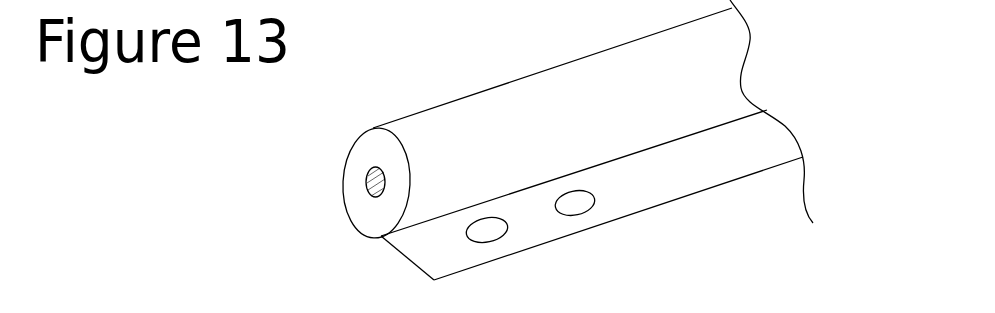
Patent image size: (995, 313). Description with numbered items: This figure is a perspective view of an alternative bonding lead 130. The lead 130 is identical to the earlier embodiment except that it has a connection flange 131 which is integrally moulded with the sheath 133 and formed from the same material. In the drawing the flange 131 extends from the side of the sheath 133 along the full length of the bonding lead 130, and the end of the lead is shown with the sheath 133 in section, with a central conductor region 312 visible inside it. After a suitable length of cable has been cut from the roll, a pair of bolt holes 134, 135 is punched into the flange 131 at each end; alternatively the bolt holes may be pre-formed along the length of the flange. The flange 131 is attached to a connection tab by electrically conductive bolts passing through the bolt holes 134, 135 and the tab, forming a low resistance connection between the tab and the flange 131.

The bonding lead 130 is at (434, 64).
The sheath 133 is at (363, 150).
The central bore 312 is at (368, 179).
The connection flange 131 is at (402, 259).
The bolt hole 134 is at (488, 228).
The bolt hole 135 is at (572, 202).